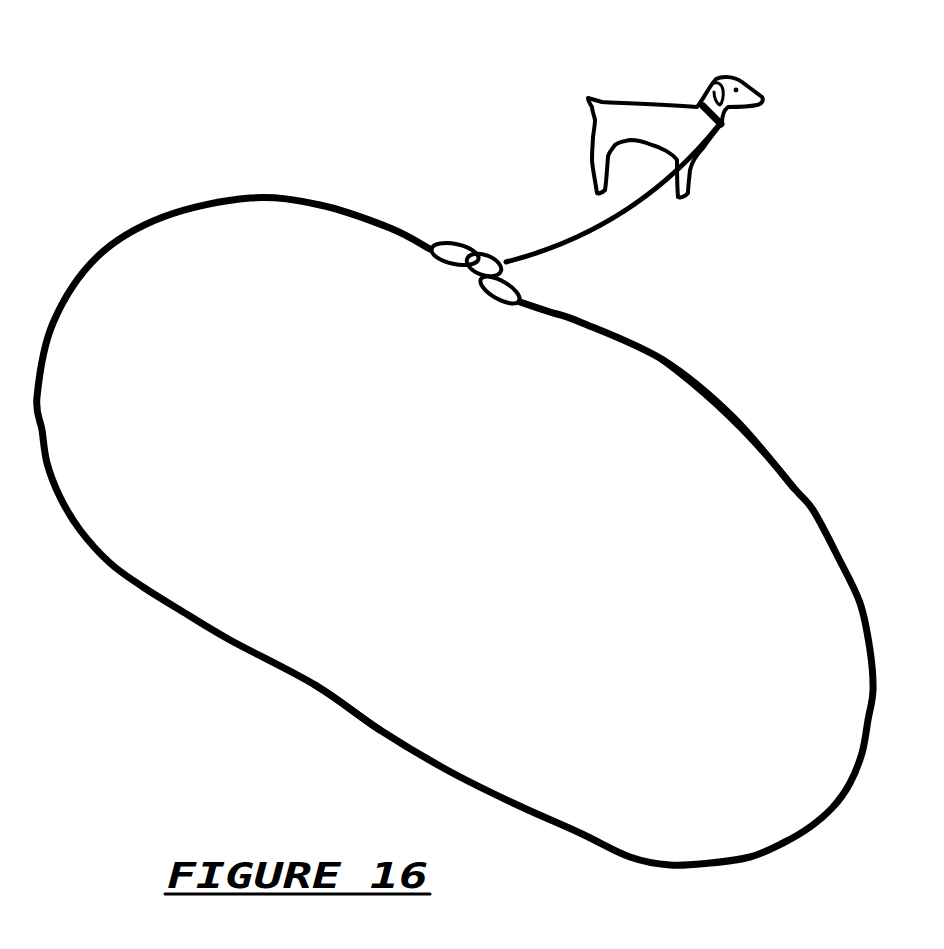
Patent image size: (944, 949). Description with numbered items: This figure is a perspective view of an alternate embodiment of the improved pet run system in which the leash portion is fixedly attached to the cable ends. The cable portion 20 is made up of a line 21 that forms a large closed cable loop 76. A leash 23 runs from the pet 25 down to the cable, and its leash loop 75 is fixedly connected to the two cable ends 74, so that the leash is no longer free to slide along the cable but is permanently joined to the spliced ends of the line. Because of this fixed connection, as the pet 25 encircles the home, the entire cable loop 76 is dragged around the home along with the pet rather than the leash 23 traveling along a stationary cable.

The cable portion 20 is at (207, 622).
The line 21 is at (315, 685).
The leash 23 is at (637, 213).
The pet 25 is at (640, 103).
The cable ends 74 is at (437, 268).
The leash loop 75 is at (492, 248).
The cable loop 76 is at (663, 358).